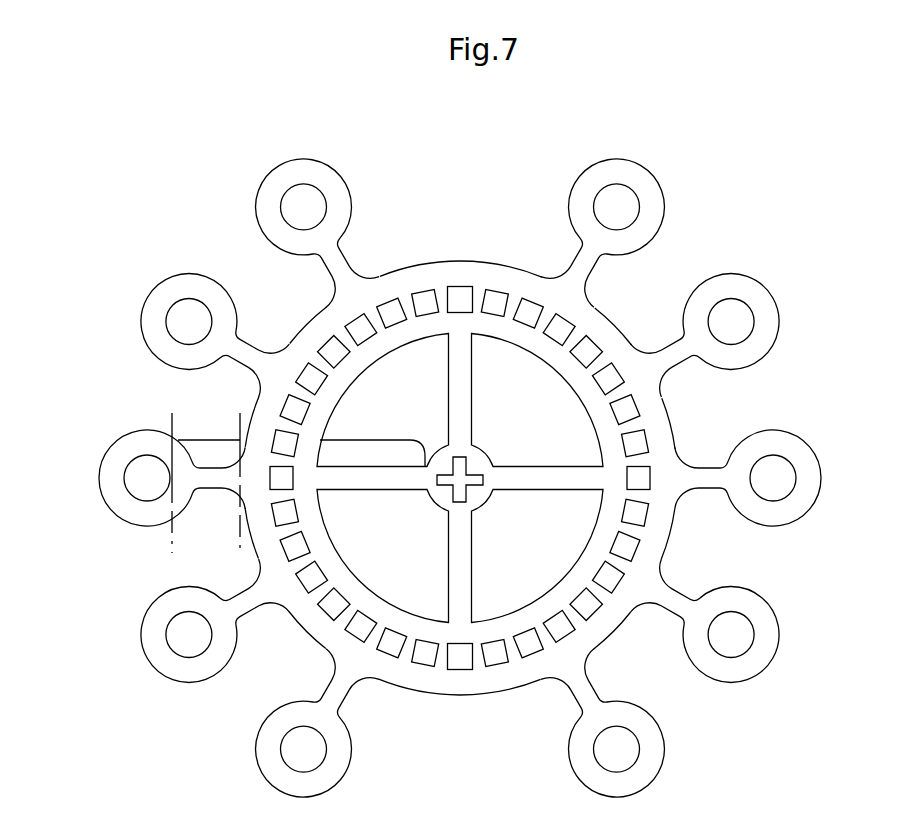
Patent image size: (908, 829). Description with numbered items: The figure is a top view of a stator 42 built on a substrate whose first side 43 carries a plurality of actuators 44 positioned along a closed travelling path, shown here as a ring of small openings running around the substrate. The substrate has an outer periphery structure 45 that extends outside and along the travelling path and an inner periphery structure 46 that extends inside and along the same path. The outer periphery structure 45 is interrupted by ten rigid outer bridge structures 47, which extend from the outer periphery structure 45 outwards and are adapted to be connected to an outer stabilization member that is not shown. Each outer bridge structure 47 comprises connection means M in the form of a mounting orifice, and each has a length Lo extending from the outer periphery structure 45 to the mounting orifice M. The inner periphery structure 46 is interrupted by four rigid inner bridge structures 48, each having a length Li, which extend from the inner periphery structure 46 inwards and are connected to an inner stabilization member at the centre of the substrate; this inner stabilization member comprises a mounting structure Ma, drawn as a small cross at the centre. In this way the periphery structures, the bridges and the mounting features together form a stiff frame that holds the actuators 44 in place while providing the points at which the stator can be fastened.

The spring plate 42 is at (210, 155).
The first side 43 is at (582, 637).
The actuators 44 is at (487, 661).
The outer periphery structure 45 is at (291, 632).
The inner periphery structure 46 is at (673, 430).
The rigid outer bridge structures 47 is at (669, 598).
The rigid inner bridge structures 48 is at (538, 477).
The connection means M is at (143, 471).
The length of outer bridge structure Lo is at (208, 440).
The length of inner bridge structure Li is at (370, 440).
The mounting structure Ma is at (456, 480).